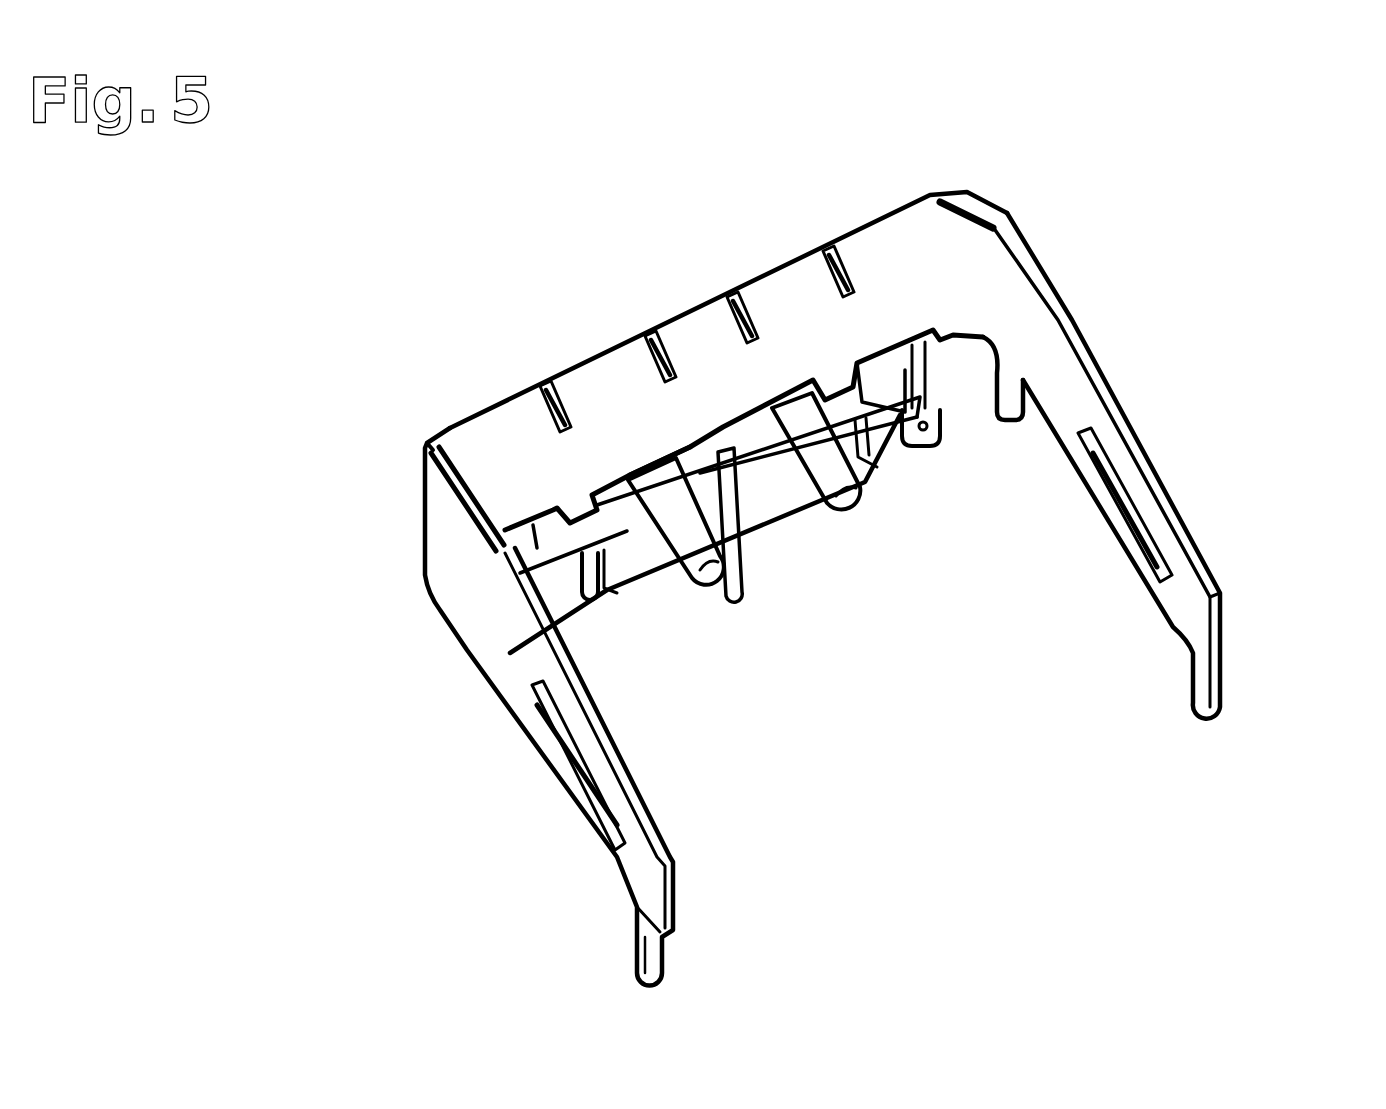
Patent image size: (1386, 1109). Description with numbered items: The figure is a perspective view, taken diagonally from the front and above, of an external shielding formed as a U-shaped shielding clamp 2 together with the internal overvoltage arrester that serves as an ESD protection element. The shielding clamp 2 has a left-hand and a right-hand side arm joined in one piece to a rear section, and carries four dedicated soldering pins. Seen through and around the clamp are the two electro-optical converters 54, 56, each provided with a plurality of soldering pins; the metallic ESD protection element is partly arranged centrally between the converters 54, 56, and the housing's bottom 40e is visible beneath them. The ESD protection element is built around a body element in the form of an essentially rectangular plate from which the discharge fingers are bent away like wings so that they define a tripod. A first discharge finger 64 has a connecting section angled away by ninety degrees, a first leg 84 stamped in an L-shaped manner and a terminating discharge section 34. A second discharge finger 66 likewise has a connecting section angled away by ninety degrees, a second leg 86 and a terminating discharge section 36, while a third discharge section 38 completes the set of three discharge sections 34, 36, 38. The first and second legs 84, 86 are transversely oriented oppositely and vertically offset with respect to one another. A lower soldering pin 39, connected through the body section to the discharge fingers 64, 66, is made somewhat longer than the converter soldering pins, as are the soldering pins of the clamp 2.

The shielding clamp 2 is at (1148, 450).
The bottom 40e is at (601, 392).
The electro-optical converter 54 is at (883, 387).
The discharge section 38 is at (670, 457).
The electro-optical converter 56 is at (557, 547).
The discharge section 36 is at (510, 653).
The discharge section 34 is at (927, 447).
The first discharge finger 64 is at (877, 467).
The first leg 84 is at (780, 523).
The second leg 86 is at (648, 560).
The lower soldering pin 39 is at (745, 595).
The second discharge finger 66 is at (629, 578).